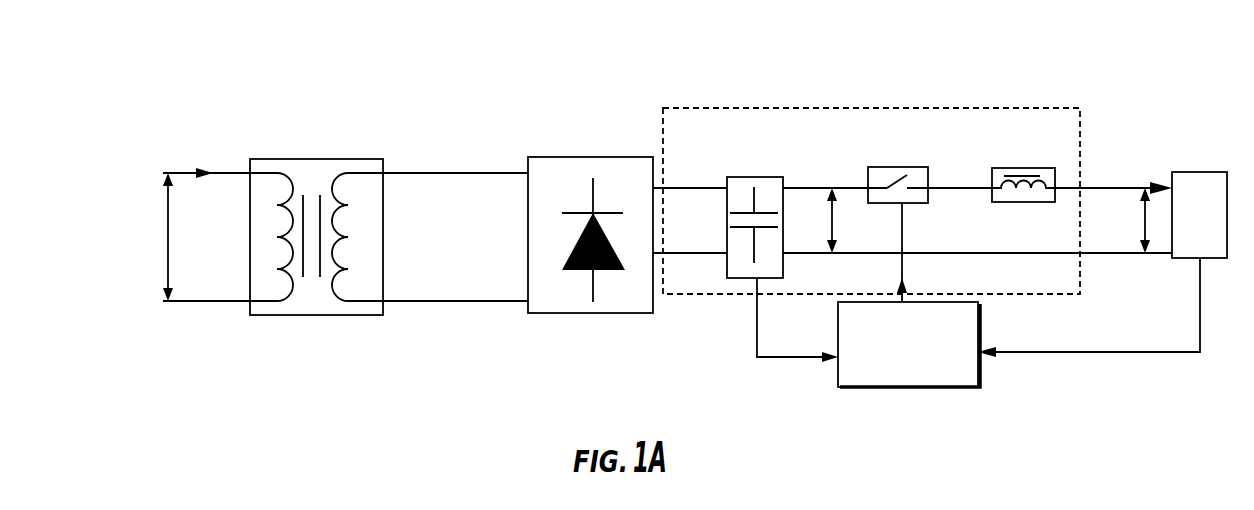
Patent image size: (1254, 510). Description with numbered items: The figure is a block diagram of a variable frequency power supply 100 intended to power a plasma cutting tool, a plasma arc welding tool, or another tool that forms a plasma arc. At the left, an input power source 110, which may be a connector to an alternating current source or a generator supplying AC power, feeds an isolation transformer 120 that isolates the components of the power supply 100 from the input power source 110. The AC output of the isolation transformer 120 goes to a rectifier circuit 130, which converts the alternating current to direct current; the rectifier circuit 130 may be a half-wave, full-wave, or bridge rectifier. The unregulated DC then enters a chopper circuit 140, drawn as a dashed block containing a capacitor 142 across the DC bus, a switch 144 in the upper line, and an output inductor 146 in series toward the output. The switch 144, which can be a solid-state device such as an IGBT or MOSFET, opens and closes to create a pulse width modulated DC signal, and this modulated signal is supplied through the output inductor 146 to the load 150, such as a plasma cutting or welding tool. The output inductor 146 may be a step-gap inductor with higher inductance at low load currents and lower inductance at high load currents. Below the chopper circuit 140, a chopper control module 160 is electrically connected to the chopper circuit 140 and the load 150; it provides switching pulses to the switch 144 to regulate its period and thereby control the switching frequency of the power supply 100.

The variable frequency power supply 100 is at (342, 68).
The input power source 110 is at (63, 203).
The isolation transformer 120 is at (312, 317).
The rectifier circuit 130 is at (593, 315).
The chopper circuit 140 is at (710, 108).
The capacitor 142 is at (742, 278).
The switch 144 is at (870, 173).
The output inductor 146 is at (990, 177).
The load 150 is at (1197, 172).
The chopper control module 160 is at (920, 388).